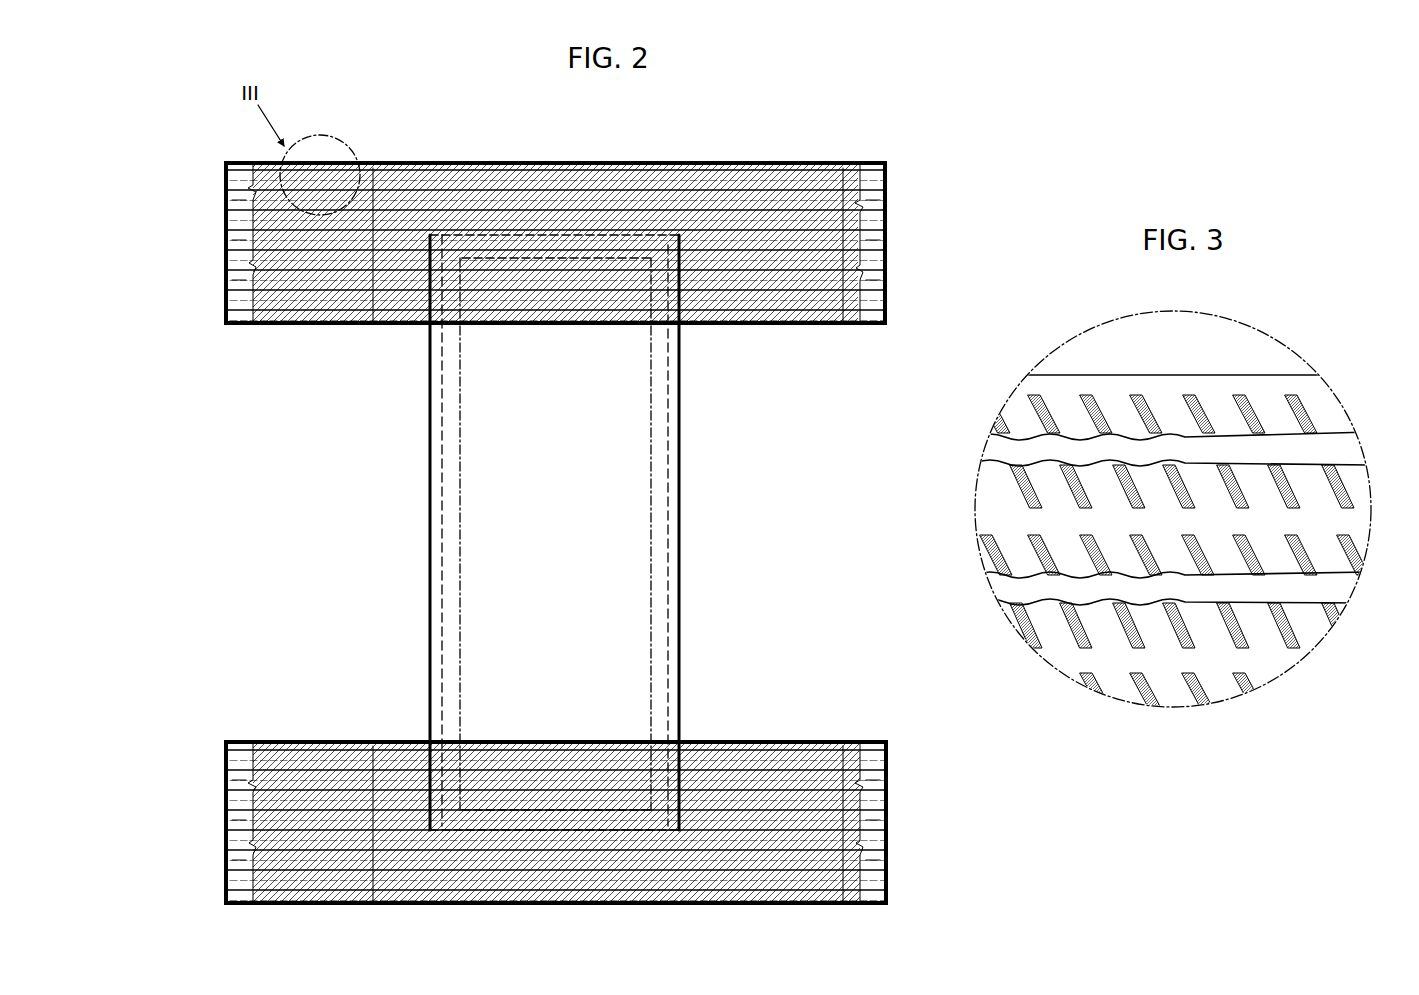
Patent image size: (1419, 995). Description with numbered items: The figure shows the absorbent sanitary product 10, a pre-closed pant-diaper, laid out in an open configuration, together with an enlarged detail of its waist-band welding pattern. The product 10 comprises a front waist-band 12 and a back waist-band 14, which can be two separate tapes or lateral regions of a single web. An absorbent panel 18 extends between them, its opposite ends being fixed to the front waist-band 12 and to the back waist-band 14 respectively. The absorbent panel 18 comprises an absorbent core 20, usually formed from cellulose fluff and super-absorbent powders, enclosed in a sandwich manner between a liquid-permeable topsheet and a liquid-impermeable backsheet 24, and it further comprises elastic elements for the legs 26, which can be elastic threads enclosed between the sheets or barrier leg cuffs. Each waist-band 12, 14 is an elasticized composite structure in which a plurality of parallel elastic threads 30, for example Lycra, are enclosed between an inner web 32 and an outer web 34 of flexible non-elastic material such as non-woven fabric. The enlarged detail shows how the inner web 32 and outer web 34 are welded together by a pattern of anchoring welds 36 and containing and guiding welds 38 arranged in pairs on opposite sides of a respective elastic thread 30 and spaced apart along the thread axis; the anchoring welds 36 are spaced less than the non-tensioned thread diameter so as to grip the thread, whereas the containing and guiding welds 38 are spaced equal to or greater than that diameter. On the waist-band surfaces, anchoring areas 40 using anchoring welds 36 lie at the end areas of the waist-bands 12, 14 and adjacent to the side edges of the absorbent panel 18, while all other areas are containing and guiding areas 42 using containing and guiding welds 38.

In FIG. 2, the absorbent sanitary product 10 is at (975, 140).
In FIG. 2, the front waist-band 12 is at (288, 920).
In FIG. 2, the back waist-band 14 is at (779, 158).
In FIG. 2, the absorbent panel 18 is at (692, 572).
In FIG. 2, the absorbent core 20 is at (651, 500).
In FIG. 2, the liquid-impermeable backsheet 24 is at (460, 592).
In FIG. 2, the elastic elements for the legs 26 is at (432, 470).
In FIG. 2, the elastic threads 30 is at (520, 200).
In FIG. 3, the elastic threads 30 is at (1347, 433).
In FIG. 2, the inner web 32 is at (378, 163).
In FIG. 2, the outer web 34 is at (886, 183).
In FIG. 3, the anchoring welds 36 is at (1145, 395).
In FIG. 3, the containing and guiding welds 38 is at (1270, 395).
In FIG. 2, the anchoring areas 40 is at (283, 326).
In FIG. 2, the containing and guiding areas 42 is at (348, 243).